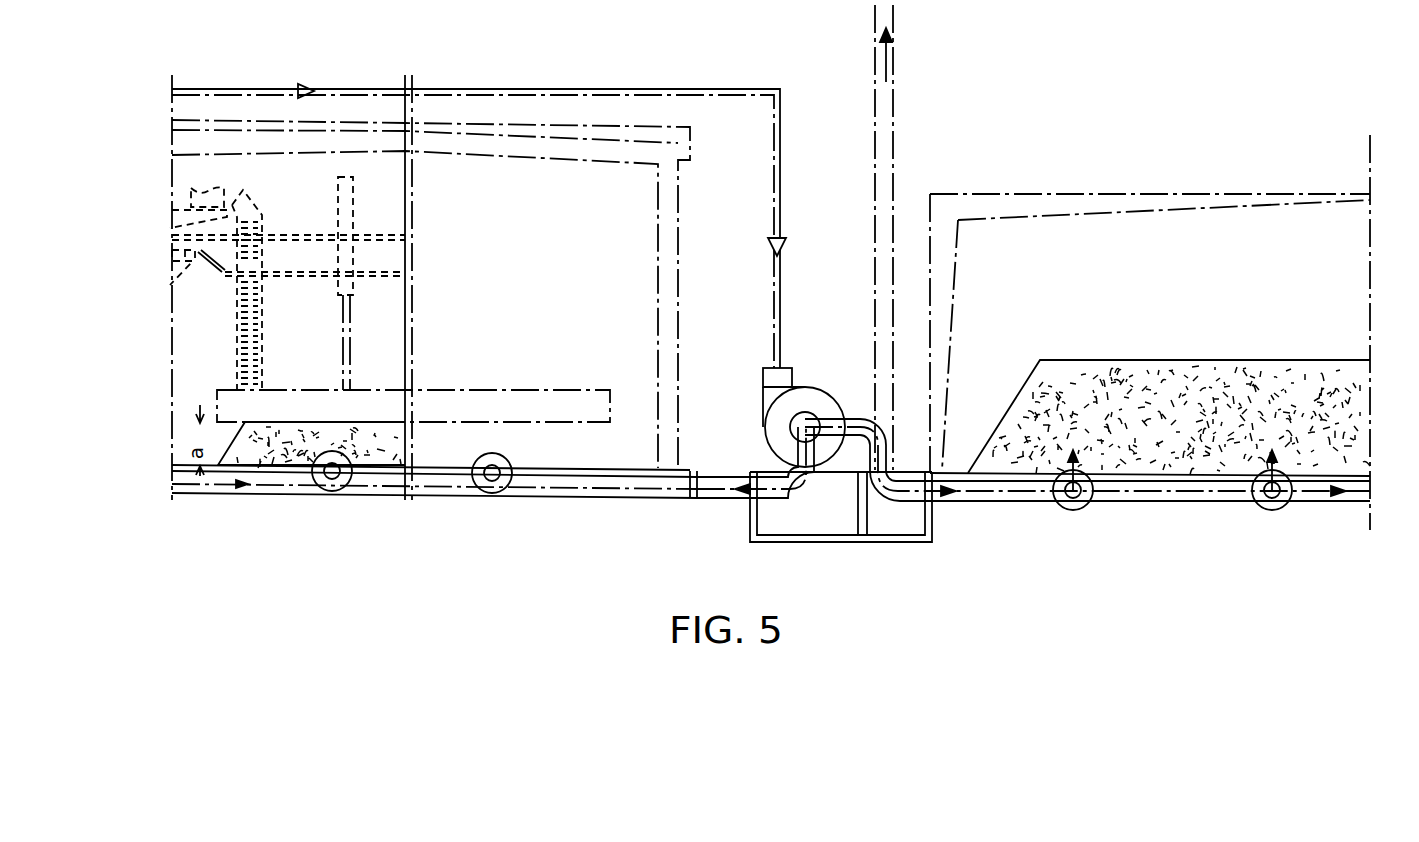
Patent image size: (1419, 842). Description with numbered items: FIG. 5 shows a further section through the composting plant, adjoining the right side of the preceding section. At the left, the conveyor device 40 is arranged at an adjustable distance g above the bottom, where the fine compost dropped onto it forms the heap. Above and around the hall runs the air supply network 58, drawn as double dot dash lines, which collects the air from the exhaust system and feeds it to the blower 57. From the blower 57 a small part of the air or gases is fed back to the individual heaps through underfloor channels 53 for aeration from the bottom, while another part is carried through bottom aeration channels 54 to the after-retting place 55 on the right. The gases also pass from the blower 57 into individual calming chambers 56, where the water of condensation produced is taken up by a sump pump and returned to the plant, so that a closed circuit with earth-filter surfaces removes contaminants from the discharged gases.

The conveyor device 40 is at (306, 417).
The underfloor channels 53 is at (330, 492).
The bottom aeration channels 54 is at (1080, 500).
The after-retting place 55 is at (1141, 352).
The calming chambers 56 is at (812, 522).
The blower 57 is at (816, 400).
The air supply network 58 is at (235, 82).